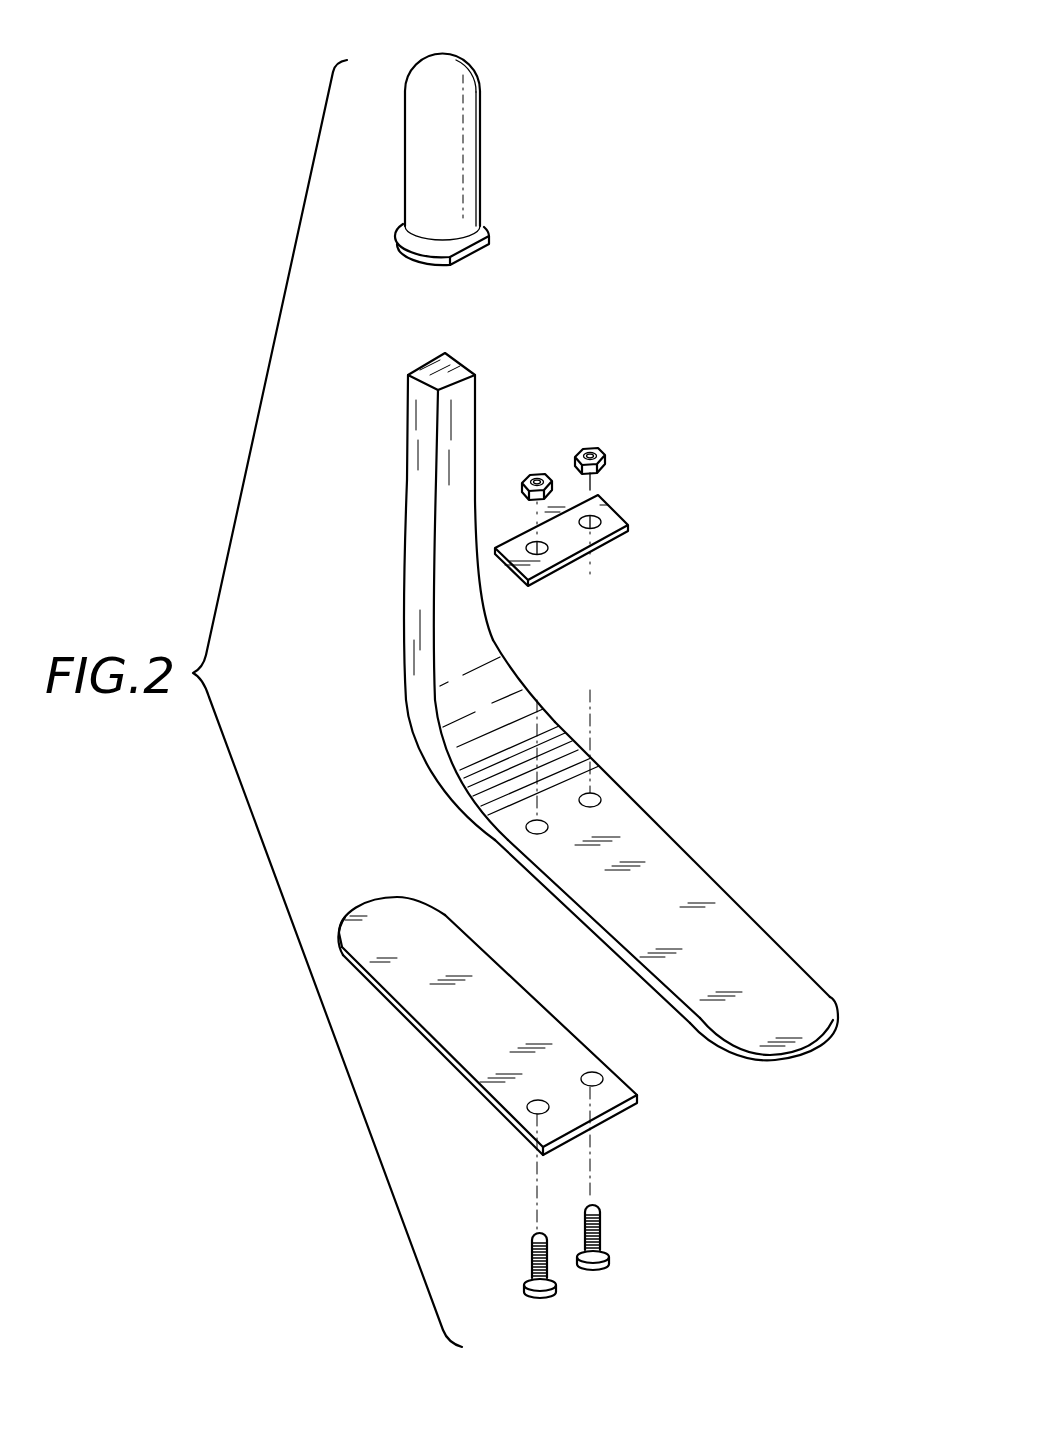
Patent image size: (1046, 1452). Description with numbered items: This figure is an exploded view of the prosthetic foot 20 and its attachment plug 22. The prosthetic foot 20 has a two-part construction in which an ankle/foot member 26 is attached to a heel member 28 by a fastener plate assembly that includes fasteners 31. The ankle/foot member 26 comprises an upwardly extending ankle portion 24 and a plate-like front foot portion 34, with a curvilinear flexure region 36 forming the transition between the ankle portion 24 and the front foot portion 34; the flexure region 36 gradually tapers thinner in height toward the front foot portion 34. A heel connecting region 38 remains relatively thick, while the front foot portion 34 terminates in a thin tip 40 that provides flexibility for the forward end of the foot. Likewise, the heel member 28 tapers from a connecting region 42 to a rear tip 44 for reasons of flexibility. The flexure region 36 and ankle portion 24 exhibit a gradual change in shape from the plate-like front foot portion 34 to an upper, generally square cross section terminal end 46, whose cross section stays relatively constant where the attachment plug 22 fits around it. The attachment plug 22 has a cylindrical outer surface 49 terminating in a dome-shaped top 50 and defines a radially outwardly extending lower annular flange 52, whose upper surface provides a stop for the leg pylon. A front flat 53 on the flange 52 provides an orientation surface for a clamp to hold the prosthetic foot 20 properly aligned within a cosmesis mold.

The prosthetic foot 20 is at (674, 449).
The attachment plug 22 is at (548, 118).
The ankle portion 24 is at (415, 510).
The ankle/foot member 26 is at (708, 853).
The heel member 28 is at (413, 1042).
The fasteners 31 is at (550, 1268).
The front foot portion 34 is at (768, 935).
The flexure region 36 is at (404, 703).
The heel connecting region 38 is at (488, 838).
The thin tip 40 is at (813, 1058).
The connecting region 42 is at (510, 1122).
The rear tip 44 is at (367, 897).
The terminal end 46 is at (458, 368).
The cylindrical outer surface 49 is at (405, 135).
The dome-shaped top 50 is at (440, 53).
The lower annular flange 52 is at (512, 233).
The front flat 53 is at (462, 258).